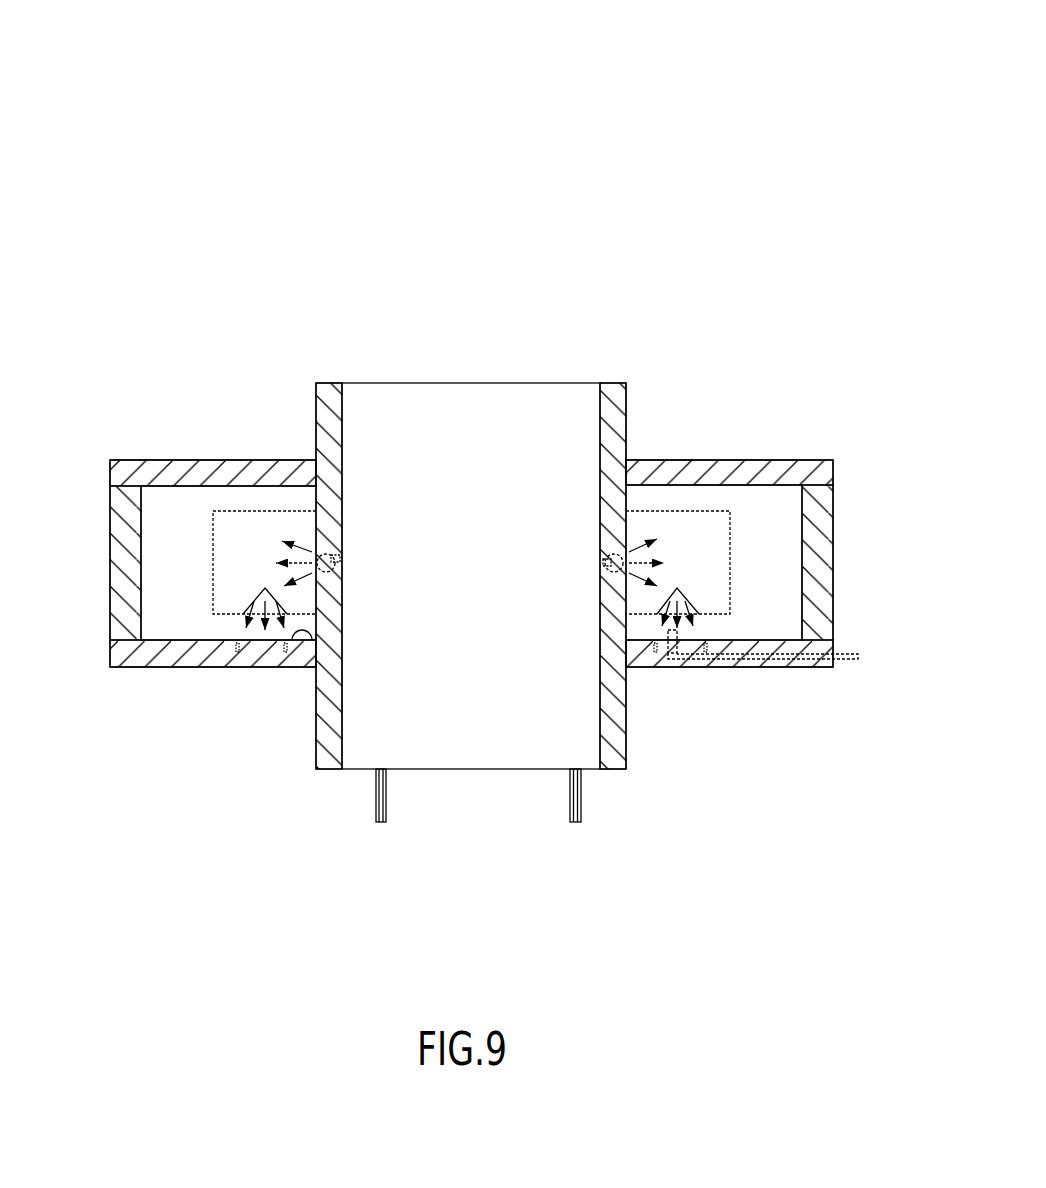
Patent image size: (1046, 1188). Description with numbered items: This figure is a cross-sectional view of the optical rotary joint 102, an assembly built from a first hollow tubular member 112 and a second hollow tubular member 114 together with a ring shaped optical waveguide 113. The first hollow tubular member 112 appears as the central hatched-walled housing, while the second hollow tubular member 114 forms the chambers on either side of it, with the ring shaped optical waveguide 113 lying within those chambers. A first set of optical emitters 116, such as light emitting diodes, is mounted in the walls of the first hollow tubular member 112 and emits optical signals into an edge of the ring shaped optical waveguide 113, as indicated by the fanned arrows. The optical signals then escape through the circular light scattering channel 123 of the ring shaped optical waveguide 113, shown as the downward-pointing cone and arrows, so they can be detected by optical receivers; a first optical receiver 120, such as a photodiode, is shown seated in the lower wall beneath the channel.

The optical rotary joint 102 is at (147, 143).
The first hollow tubular member 112 is at (462, 382).
The ring shaped optical waveguide 113 is at (170, 615).
The second hollow tubular member 114 is at (147, 459).
The first set of optical emitters 116 is at (342, 555).
The first optical receivers 120 is at (675, 652).
The circular light scattering channel 123 is at (683, 595).